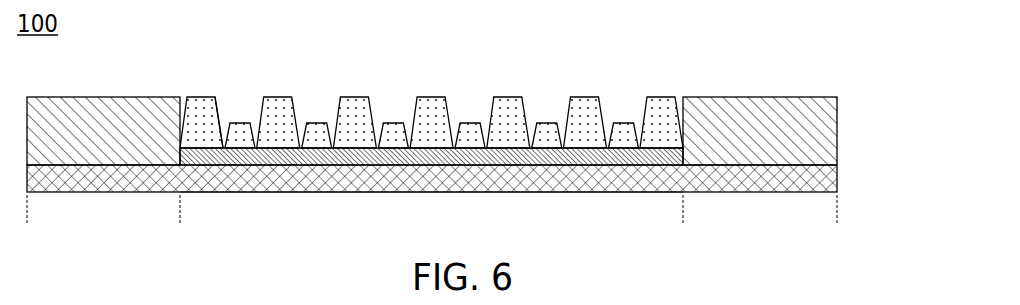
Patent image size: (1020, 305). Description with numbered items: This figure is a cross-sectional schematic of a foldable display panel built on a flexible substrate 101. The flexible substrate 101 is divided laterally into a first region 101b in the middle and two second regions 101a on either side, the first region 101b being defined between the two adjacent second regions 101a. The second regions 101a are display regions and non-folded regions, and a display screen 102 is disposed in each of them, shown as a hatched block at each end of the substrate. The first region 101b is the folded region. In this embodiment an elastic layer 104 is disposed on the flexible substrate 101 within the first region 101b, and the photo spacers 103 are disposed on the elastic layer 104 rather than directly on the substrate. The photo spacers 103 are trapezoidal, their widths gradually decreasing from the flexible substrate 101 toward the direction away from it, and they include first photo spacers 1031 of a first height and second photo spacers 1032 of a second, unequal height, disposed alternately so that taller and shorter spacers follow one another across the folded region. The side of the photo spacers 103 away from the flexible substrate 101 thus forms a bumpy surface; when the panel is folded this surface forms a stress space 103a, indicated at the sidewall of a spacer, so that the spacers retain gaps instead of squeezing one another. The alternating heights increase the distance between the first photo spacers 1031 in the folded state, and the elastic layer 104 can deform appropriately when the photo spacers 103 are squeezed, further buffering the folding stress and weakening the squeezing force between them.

The flexible substrate 101 is at (825, 172).
The second regions 101a is at (178, 208).
The first region 101b is at (681, 208).
The display screens 102 is at (827, 118).
The photo spacers 103 is at (438, 80).
The first photo spacers 1031 is at (655, 127).
The second photo spacers 1032 is at (432, 100).
The stress space 103a is at (235, 108).
The elastic layer 104 is at (690, 157).